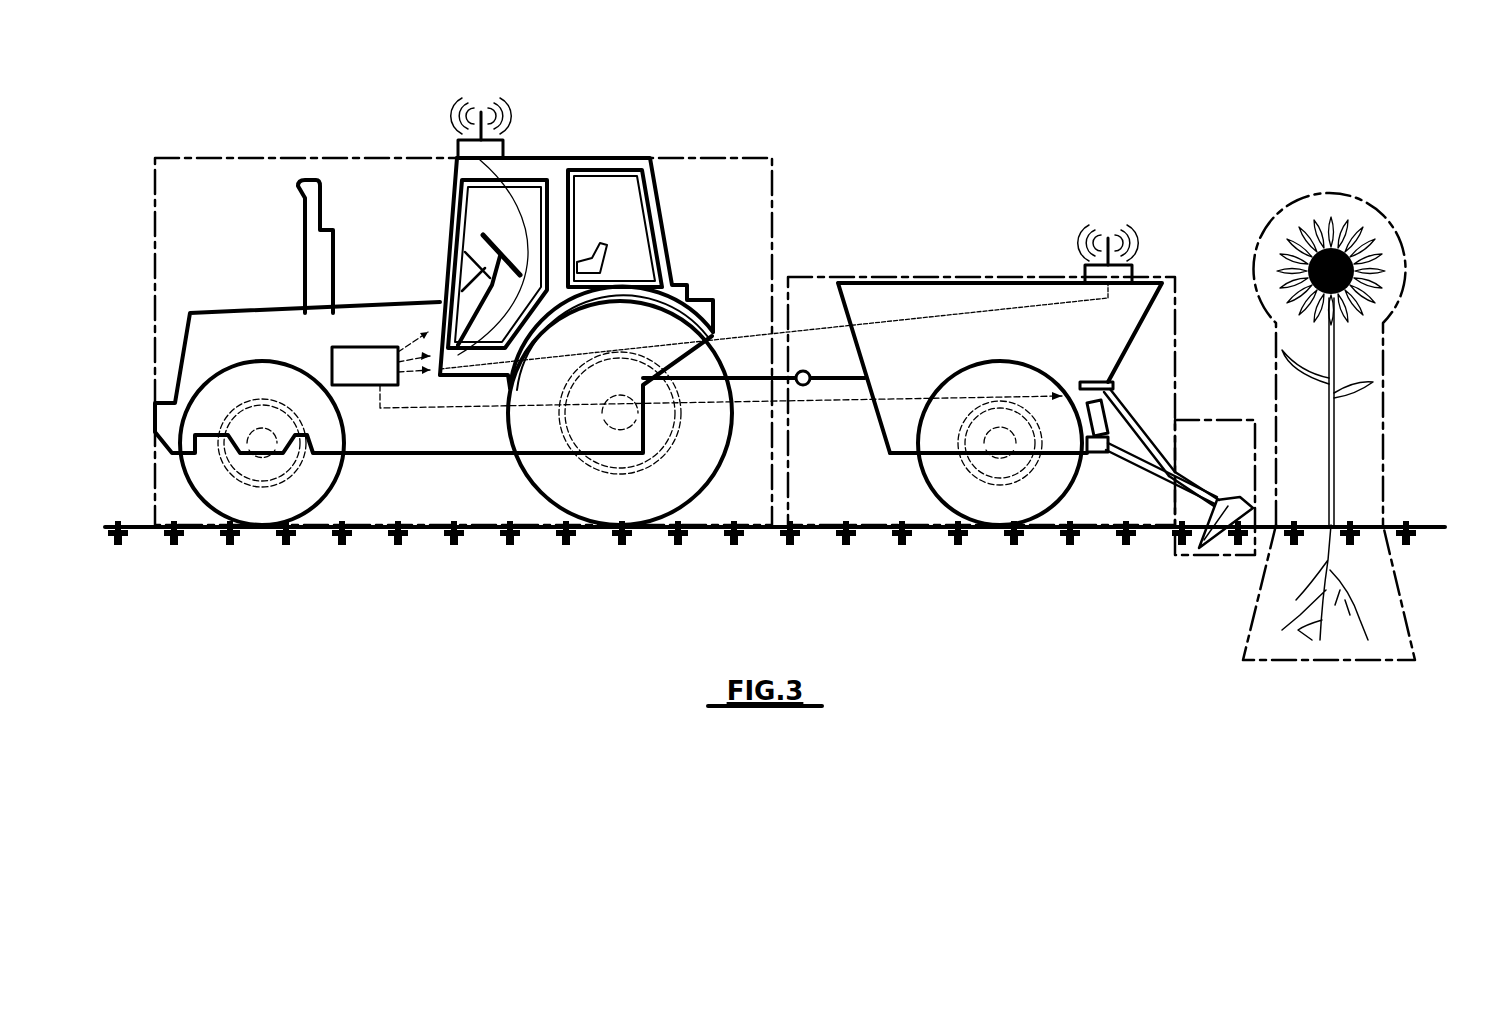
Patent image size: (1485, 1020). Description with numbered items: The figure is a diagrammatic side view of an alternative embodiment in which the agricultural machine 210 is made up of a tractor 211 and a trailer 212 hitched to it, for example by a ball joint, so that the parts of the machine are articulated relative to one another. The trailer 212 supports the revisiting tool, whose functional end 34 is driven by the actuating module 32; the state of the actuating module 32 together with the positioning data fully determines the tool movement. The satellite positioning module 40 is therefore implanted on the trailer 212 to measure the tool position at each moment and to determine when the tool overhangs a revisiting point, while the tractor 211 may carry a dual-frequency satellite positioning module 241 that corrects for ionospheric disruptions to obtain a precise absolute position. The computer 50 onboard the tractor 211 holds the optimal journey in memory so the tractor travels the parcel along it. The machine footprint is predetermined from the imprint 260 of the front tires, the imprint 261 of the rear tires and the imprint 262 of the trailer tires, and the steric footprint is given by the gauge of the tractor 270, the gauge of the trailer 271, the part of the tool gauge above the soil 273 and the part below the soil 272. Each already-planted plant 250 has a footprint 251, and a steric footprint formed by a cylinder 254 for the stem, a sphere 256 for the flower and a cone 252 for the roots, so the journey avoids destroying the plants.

The agricultural machine 210 is at (813, 95).
The tractor 211 is at (628, 195).
The trailer 212 is at (905, 305).
The dual-frequency satellite positioning module 241 is at (503, 150).
The satellite positioning module 40 is at (1085, 268).
The actuating module 32 is at (1095, 380).
The computer 50 is at (352, 385).
The functional end 34 is at (795, 528).
The imprint of the front tires of the tractor 260 is at (262, 528).
The imprint of the rear tires of the tractor 261 is at (660, 528).
The imprint of the tires of the trailer 262 is at (935, 528).
The gauge of the tractor 270 is at (190, 157).
The gauge of the trailer 271 is at (798, 275).
The part of the gauge of the tool below the soil 272 is at (1197, 556).
The part of the gauge of the tool above the soil 273 is at (1192, 420).
The plant 250 is at (1358, 410).
The footprint 251 is at (1392, 523).
The cone 252 is at (1414, 625).
The cylinder 254 is at (1384, 445).
The sphere 256 is at (1365, 216).